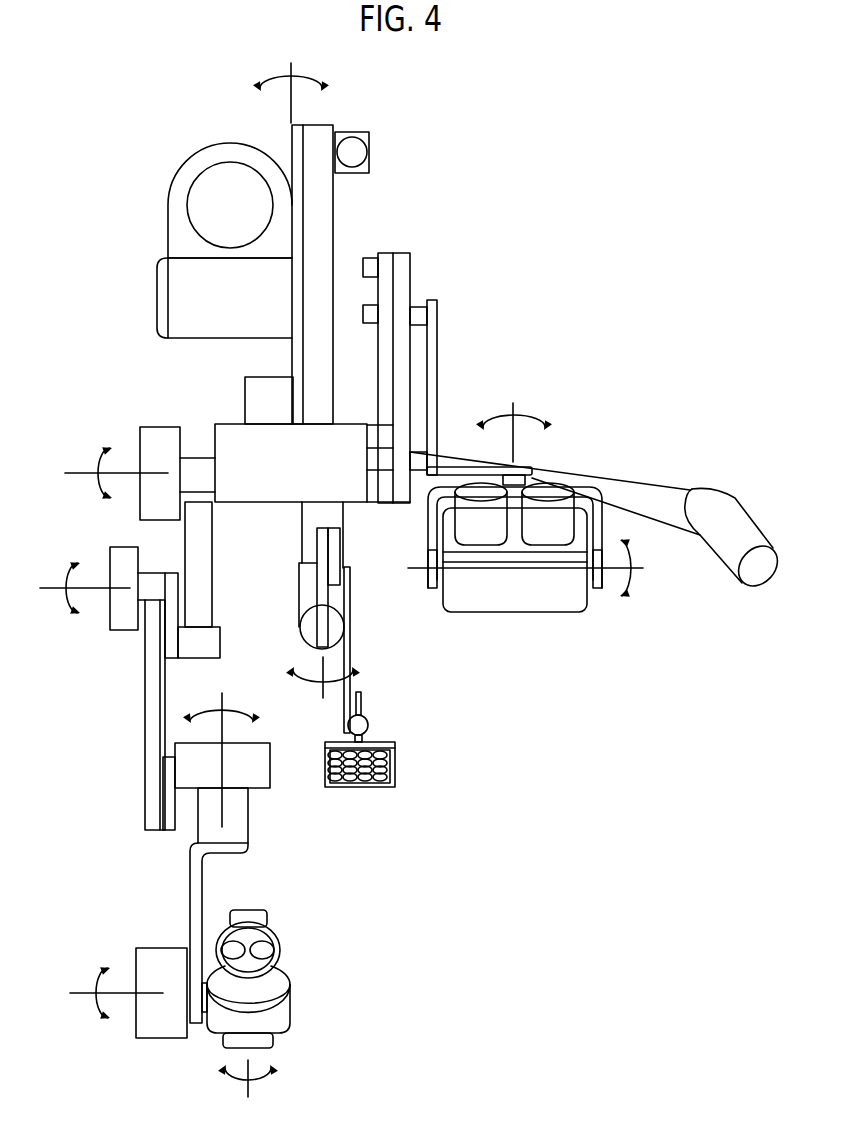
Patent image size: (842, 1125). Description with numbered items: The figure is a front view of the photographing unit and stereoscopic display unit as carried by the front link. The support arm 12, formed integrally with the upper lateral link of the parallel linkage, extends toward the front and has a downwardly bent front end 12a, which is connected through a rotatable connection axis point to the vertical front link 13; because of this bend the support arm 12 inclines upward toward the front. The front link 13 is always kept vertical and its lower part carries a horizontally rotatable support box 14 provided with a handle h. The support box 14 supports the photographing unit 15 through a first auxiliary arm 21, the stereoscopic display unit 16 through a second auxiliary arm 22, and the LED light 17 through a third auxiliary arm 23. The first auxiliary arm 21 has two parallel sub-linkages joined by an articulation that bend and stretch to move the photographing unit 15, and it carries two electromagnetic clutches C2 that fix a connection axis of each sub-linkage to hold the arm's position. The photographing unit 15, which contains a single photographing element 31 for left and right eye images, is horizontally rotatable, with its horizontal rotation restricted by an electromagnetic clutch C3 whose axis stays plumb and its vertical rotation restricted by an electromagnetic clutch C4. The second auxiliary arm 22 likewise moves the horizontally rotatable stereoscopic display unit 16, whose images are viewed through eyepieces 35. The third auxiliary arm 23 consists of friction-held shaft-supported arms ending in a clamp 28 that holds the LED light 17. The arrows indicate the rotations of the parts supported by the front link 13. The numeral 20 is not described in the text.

The support arm 12 is at (168, 197).
The front end 12a is at (157, 300).
The front link 13 is at (333, 235).
The support box 14 is at (222, 425).
The photographing unit 15 is at (278, 952).
The stereoscopic display unit 16 is at (560, 612).
The LED light 17 is at (395, 765).
The sensor unit 20 is at (369, 157).
The first auxiliary arm 21 is at (104, 735).
The second auxiliary arm 22 is at (470, 345).
The third auxiliary arm 23 is at (313, 595).
The clamp 28 is at (368, 725).
The photographing element 31 is at (250, 910).
The eyepieces 35 is at (547, 537).
The handle h is at (737, 500).
The electromagnetic clutch C2 is at (140, 443).
The electromagnetic clutch C3 is at (270, 763).
The electromagnetic clutch C4 is at (160, 1040).